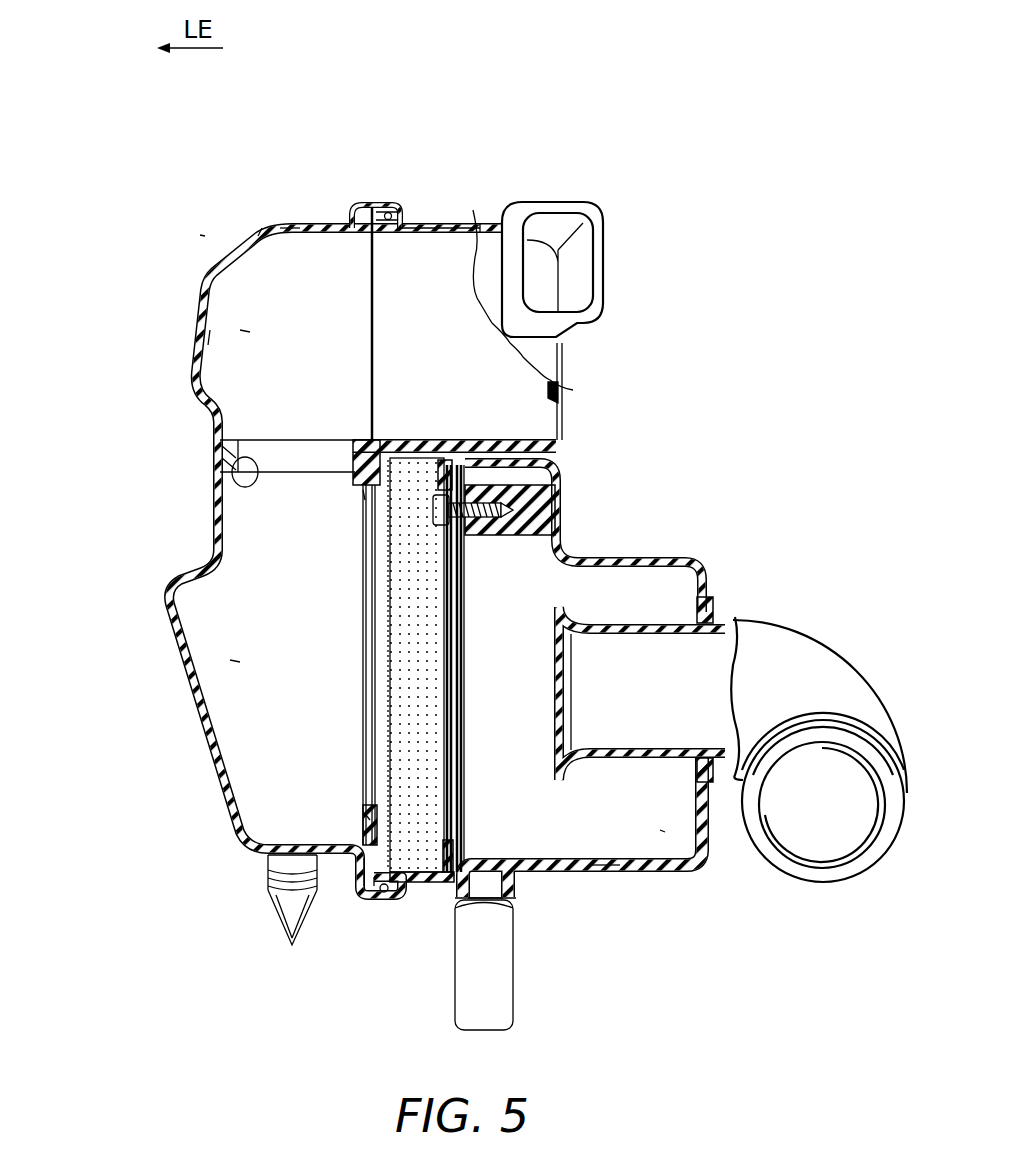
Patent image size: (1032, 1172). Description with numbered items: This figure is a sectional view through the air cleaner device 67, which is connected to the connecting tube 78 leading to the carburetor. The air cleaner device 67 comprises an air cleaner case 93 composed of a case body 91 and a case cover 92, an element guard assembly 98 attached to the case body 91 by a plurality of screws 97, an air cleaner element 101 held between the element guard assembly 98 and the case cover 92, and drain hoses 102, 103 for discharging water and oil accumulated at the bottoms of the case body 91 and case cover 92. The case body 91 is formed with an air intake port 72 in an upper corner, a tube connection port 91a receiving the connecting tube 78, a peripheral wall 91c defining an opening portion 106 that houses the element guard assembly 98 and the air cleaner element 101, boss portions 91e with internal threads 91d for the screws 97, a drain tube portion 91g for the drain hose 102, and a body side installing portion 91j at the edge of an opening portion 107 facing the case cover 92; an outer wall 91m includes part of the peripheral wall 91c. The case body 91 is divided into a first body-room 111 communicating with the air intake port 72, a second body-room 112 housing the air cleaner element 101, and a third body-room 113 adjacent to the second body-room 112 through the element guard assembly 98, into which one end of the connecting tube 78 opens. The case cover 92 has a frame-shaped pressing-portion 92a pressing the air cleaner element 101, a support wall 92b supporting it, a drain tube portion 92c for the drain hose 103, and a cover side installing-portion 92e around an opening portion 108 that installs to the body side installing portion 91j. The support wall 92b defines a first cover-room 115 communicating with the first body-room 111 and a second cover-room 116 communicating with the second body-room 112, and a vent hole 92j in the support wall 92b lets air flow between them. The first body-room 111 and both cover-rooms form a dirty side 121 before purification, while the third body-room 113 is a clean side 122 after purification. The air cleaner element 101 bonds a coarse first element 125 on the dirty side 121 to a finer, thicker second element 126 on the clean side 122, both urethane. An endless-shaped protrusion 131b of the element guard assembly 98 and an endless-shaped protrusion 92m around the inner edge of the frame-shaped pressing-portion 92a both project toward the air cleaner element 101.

The air cleaner device 67 is at (163, 234).
The dirty side 121 is at (250, 280).
The case cover 92 is at (248, 222).
The air cleaner case 93 is at (287, 222).
The opening portion 107 is at (345, 258).
The cover side installing-portion 92e is at (358, 250).
The body side installing portion 91j is at (386, 252).
The opening portion 108 is at (398, 254).
The case body 91 is at (460, 222).
The first body-room 111 is at (440, 308).
The air intake port 72 is at (568, 197).
The first cover-room 115 is at (268, 330).
The frame-shaped pressing-portion 92a is at (352, 466).
The support wall 92b is at (240, 440).
The vent hole 92j is at (218, 482).
The opening portion 106 is at (356, 497).
The air cleaner element 101 is at (380, 552).
The second body-room 112 is at (415, 606).
The second cover-room 116 is at (255, 660).
The peripheral wall 91c is at (552, 400).
The screws 97 is at (480, 480).
The internal threads 91d is at (505, 530).
The boss portions 91e is at (470, 612).
The element guard assembly 98 is at (470, 523).
The tube connection port 91a is at (722, 647).
The connecting tube 78 is at (803, 667).
The clean side 122 is at (703, 853).
The third body-room 113 is at (668, 822).
The outer wall 91m is at (600, 868).
The drain tube portion 91g is at (500, 883).
The drain hose 102 is at (498, 982).
The protrusion 131b is at (420, 860).
The second element 126 is at (446, 850).
The protrusion 92m is at (376, 870).
The first element 125 is at (362, 815).
The drain hose 103 is at (282, 924).
The drain tube portion 92c is at (268, 854).